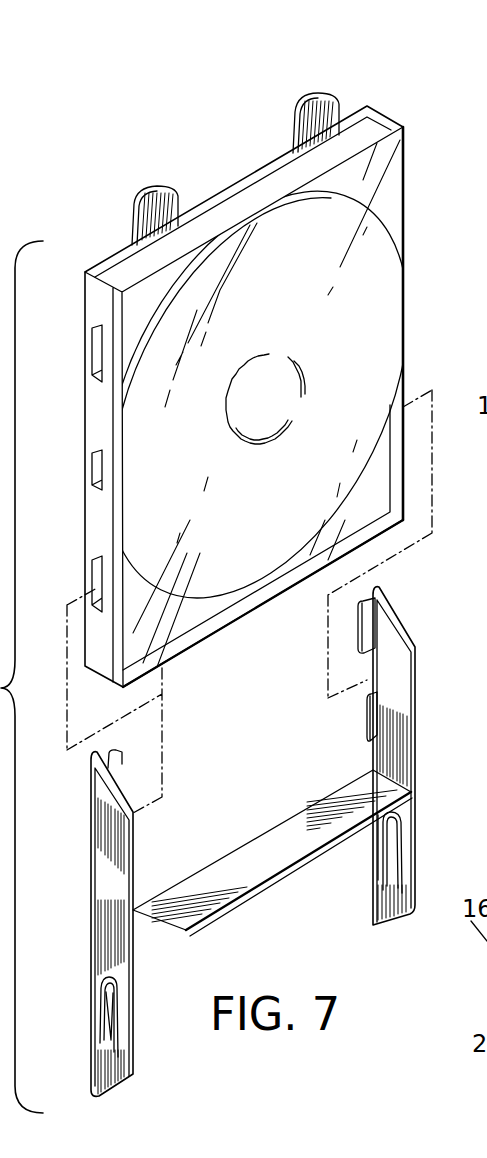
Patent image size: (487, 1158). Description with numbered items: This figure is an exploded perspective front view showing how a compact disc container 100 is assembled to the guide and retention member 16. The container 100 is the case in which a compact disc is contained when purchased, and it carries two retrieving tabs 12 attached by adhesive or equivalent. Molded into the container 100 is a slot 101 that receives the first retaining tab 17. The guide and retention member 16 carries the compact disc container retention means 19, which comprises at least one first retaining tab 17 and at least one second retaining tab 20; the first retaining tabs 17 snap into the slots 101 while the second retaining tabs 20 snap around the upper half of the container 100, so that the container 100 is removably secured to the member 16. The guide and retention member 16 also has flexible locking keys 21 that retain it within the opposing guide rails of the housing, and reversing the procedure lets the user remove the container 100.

The compact disc container 100 is at (251, 358).
The retrieving tabs 12 is at (160, 188).
The slot 101 is at (97, 586).
The guide and retention member 16 is at (260, 831).
The first retaining tab 17 is at (372, 690).
The compact disc container retention means 19 is at (362, 748).
The second retaining tab 20 is at (117, 766).
The flexible locking key 21 is at (104, 1007).